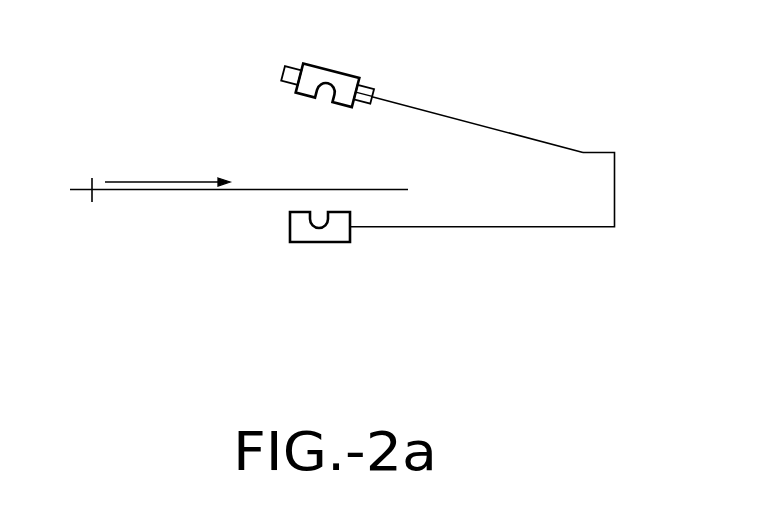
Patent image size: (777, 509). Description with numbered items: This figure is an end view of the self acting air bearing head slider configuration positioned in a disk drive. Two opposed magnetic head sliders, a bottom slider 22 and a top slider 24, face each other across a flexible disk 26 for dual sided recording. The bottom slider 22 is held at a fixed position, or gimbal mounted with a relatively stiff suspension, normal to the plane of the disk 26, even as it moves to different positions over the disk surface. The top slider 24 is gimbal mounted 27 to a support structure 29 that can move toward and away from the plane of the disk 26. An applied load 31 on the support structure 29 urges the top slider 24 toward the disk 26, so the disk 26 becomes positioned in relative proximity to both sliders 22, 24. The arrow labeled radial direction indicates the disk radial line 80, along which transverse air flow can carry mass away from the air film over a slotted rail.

The bottom slider 22 is at (317, 238).
The top slider 24 is at (323, 75).
The flexible disk 26 is at (175, 190).
The gimbal mount 27 is at (370, 85).
The support structure 29 is at (487, 123).
The applied load 31 is at (585, 152).
The disk radial line 80 is at (175, 182).